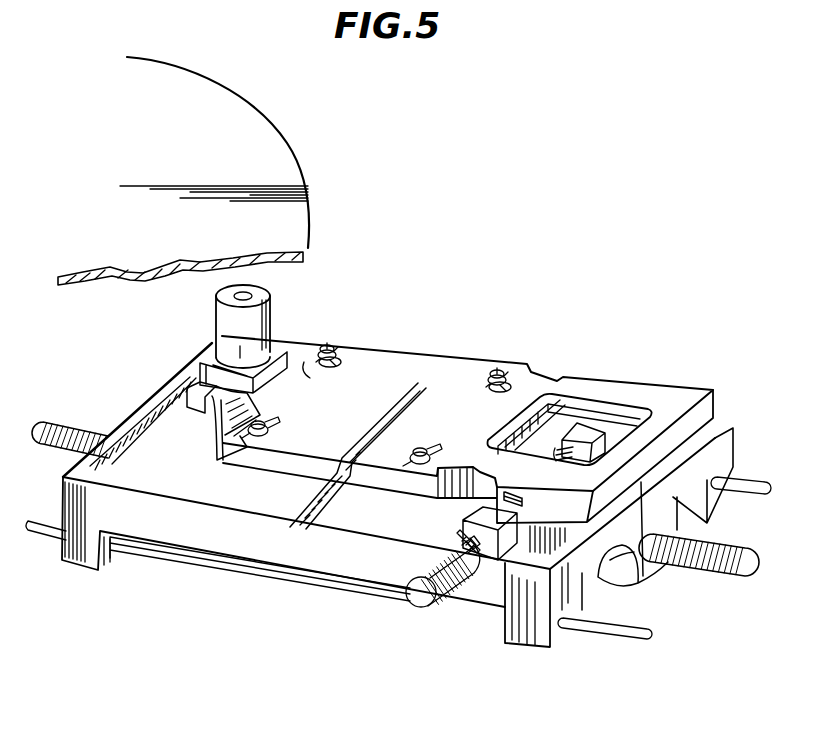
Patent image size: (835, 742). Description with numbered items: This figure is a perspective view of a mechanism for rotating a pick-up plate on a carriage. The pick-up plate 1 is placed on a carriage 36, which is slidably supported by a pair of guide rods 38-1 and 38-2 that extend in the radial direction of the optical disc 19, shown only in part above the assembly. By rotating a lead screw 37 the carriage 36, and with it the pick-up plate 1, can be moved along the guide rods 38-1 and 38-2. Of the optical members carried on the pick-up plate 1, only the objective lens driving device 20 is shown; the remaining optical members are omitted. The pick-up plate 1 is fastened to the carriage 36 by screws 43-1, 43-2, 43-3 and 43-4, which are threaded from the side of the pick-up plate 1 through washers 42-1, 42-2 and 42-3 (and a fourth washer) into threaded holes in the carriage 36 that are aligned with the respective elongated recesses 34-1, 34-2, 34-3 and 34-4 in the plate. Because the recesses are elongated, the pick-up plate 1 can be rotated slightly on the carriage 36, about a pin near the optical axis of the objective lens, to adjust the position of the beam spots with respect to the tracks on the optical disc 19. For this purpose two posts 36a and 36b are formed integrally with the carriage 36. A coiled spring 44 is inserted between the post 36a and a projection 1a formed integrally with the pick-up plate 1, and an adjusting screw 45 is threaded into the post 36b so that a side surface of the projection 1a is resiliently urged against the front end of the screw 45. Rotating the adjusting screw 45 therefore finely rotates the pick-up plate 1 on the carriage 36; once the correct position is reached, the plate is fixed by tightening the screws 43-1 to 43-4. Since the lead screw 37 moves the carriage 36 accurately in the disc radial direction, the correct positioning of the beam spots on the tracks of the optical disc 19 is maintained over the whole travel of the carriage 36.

The pick-up plate 1 is at (412, 362).
The projection 1a is at (560, 403).
The optical disc 19 is at (277, 143).
The objective lens driving device 20 is at (217, 320).
The elongated recess 34-1 is at (290, 445).
The elongated recess 34-2 is at (403, 450).
The elongated recess 34-3 is at (325, 345).
The elongated recess 34-4 is at (497, 357).
The carriage 36 is at (263, 540).
The post 36a is at (568, 468).
The post 36b is at (522, 600).
The lead screw 37 is at (727, 552).
The guide rod 38-1 is at (615, 637).
The guide rod 38-2 is at (752, 478).
The washer 42-1 is at (277, 437).
The washer 42-2 is at (430, 465).
The washer 42-3 is at (312, 372).
The screw 43-1 is at (203, 420).
The screw 43-2 is at (370, 428).
The screw 43-3 is at (338, 355).
The screw 43-4 is at (483, 363).
The coiled spring 44 is at (572, 424).
The adjusting screw 45 is at (467, 570).